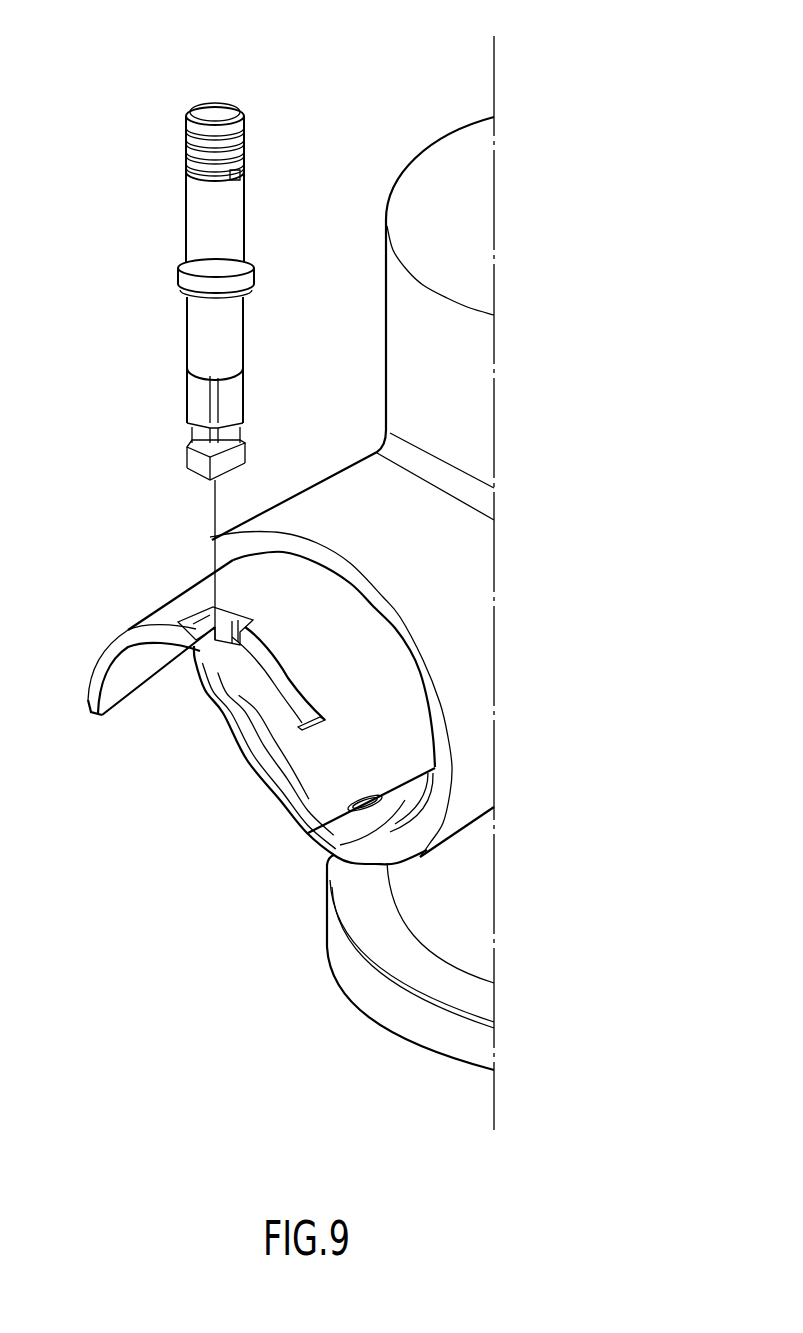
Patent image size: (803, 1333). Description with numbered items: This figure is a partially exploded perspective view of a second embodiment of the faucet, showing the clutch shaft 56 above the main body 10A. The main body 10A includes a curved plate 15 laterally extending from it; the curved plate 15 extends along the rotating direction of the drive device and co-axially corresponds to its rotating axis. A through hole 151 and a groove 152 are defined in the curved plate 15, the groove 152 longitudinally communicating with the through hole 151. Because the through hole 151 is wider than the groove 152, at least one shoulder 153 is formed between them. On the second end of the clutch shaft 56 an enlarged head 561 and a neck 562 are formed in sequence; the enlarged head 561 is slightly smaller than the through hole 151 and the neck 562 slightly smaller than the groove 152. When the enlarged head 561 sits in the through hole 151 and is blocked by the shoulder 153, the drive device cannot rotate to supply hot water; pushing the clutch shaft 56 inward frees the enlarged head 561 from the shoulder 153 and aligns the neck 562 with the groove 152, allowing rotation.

The main body 10A is at (352, 138).
The curved plate 15 is at (313, 773).
The through hole 151 is at (212, 612).
The groove 152 is at (288, 683).
The shoulder 153 is at (215, 627).
The clutch shaft 56 is at (176, 236).
The enlarged head 561 is at (190, 478).
The neck 562 is at (186, 432).